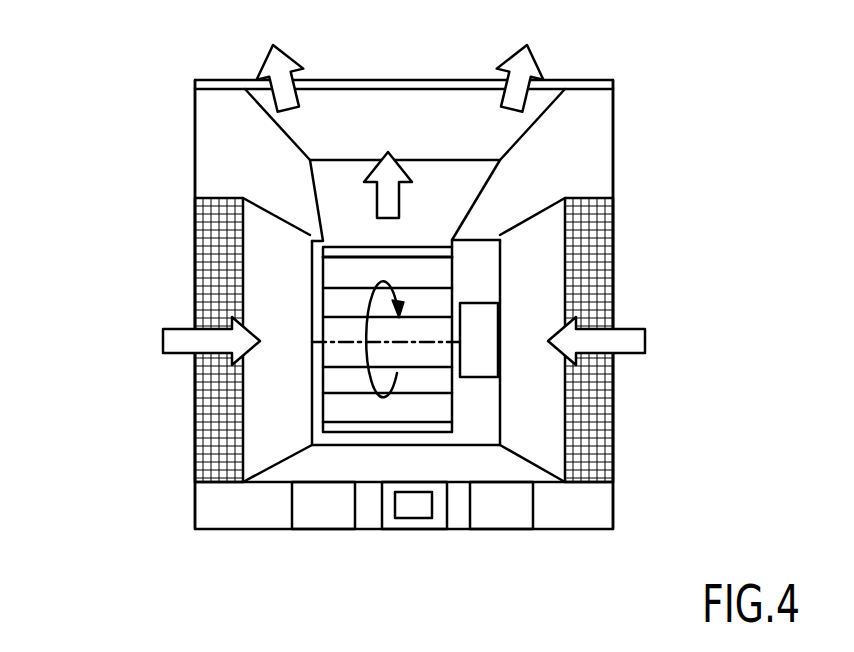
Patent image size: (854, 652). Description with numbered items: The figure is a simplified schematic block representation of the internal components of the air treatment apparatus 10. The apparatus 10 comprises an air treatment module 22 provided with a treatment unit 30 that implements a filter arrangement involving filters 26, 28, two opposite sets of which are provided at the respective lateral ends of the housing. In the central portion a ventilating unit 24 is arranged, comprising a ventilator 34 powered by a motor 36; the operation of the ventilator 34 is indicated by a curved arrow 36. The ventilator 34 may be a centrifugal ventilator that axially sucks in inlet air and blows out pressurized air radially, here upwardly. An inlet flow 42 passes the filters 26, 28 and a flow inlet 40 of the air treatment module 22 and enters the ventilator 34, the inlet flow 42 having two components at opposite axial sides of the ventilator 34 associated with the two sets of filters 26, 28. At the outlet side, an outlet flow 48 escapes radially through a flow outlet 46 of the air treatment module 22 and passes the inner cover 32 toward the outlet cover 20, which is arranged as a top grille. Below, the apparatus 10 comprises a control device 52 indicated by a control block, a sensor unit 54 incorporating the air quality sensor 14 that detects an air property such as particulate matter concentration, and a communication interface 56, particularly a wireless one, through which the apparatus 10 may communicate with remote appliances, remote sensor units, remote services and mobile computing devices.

The air treatment apparatus 10 is at (157, 79).
The air quality sensor 14 is at (432, 507).
The outlet cover 20 is at (418, 82).
The air treatment module 22 is at (646, 184).
The ventilating unit 24 is at (472, 410).
The filter 26 is at (410, 340).
The filter 28 is at (217, 388).
The treatment unit 30 is at (615, 388).
The inner cover 32 is at (437, 157).
The ventilator 34 is at (452, 272).
The motor 36 is at (370, 305).
The flow inlet 40 is at (258, 373).
The inlet flow 42 is at (187, 340).
The flow outlet 46 is at (342, 118).
The outlet flow 48 is at (383, 200).
The control device 52 is at (320, 510).
The sensor unit 54 is at (407, 525).
The communication interface 56 is at (512, 507).